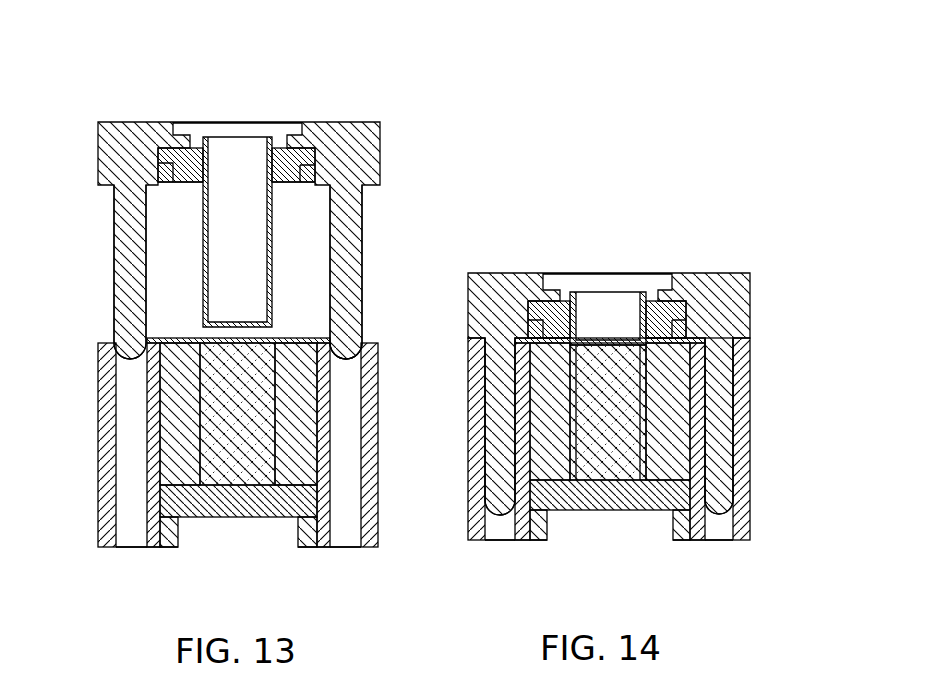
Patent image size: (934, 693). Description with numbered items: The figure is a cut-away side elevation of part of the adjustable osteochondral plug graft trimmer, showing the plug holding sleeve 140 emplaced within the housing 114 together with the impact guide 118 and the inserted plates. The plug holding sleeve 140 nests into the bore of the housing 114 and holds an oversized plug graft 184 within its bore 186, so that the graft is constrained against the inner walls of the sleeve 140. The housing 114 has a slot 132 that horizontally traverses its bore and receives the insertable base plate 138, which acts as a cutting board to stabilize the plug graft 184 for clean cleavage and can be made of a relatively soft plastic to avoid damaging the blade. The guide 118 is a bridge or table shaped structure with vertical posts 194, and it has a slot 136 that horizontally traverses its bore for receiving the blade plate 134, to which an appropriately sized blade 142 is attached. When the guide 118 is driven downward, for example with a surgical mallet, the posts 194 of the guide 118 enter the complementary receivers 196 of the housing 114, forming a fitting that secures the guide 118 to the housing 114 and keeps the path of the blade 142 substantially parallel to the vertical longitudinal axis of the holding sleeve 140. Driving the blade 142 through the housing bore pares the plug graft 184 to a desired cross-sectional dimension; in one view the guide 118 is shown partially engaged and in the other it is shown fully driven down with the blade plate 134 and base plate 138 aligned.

In FIG. 13, the housing 114 is at (385, 375).
In FIG. 14, the housing 114 is at (750, 425).
In FIG. 13, the guide 118 is at (322, 120).
In FIG. 14, the guide 118 is at (702, 272).
In FIG. 13, the slot 132 is at (318, 497).
In FIG. 14, the slot 132 is at (705, 470).
In FIG. 13, the blade plate 134 is at (184, 182).
In FIG. 14, the blade plate 134 is at (515, 272).
In FIG. 13, the slot 136 is at (365, 155).
In FIG. 14, the slot 136 is at (607, 319).
In FIG. 13, the base plate 138 is at (200, 517).
In FIG. 14, the base plate 138 is at (580, 510).
In FIG. 13, the plug holding sleeve 140 is at (360, 335).
In FIG. 14, the plug holding sleeve 140 is at (735, 348).
In FIG. 13, the blade 142 is at (277, 265).
In FIG. 14, the blade 142 is at (646, 510).
In FIG. 13, the plug graft 184 is at (208, 338).
In FIG. 14, the plug graft 184 is at (608, 340).
In FIG. 13, the bore 186 is at (240, 517).
In FIG. 14, the bore 186 is at (578, 292).
In FIG. 13, the posts 194 is at (112, 290).
In FIG. 14, the posts 194 is at (495, 420).
In FIG. 13, the receivers 196 is at (130, 537).
In FIG. 14, the receivers 196 is at (500, 530).